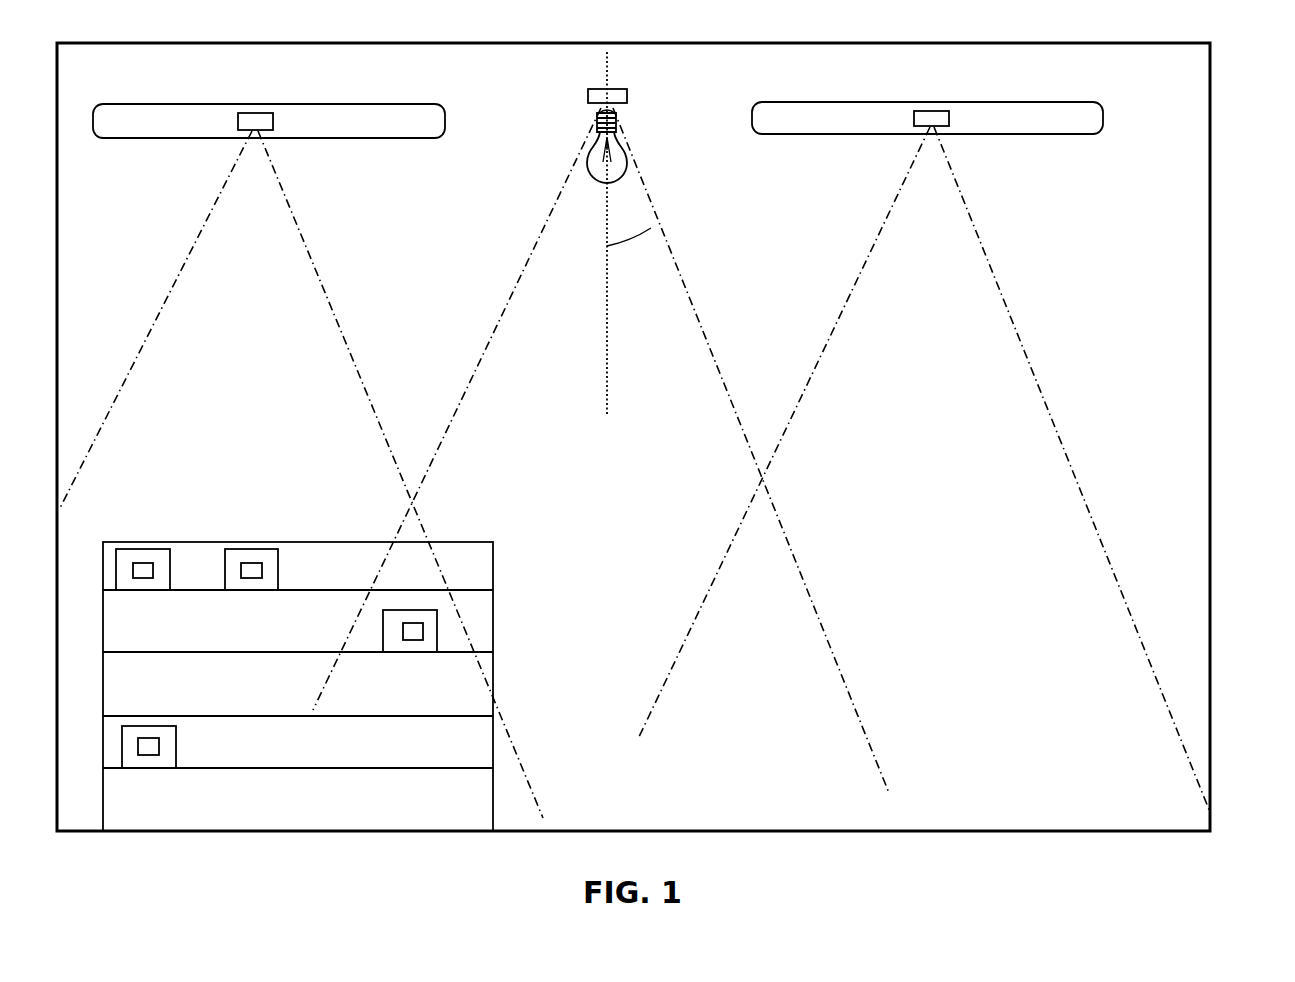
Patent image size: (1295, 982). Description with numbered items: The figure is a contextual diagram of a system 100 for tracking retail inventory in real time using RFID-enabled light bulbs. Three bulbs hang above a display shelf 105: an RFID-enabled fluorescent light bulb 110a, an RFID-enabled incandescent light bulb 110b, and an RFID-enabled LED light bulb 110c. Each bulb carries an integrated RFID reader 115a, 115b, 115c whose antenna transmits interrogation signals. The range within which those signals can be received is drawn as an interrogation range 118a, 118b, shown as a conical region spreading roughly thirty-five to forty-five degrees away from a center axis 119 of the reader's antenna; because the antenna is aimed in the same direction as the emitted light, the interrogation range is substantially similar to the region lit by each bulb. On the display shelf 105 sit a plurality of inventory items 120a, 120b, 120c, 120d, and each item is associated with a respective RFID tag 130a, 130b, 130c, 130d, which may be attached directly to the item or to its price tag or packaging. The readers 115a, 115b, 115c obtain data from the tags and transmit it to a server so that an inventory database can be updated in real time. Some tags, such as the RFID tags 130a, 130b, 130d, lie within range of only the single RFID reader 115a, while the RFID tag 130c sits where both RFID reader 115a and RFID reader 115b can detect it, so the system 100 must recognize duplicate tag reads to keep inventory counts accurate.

The system 100 is at (1211, 100).
The display shelf 105 is at (337, 542).
The RFID-enabled fluorescent light bulb 110a is at (120, 104).
The RFID-enabled incandescent light bulb 110b is at (628, 172).
The RFID-enabled LED light bulb 110c is at (797, 102).
The RFID reader 115a is at (258, 113).
The RFID reader 115b is at (617, 91).
The RFID reader 115c is at (938, 111).
The interrogation range 118a is at (463, 395).
The interrogation range 118b is at (707, 340).
The center axis 119 is at (605, 362).
The inventory item 120a is at (163, 549).
The inventory item 120b is at (248, 549).
The inventory item 120c is at (432, 633).
The inventory item 120d is at (177, 742).
The RFID tag 130a is at (141, 562).
The RFID tag 130b is at (247, 562).
The RFID tag 130c is at (412, 623).
The RFID tag 130d is at (148, 738).